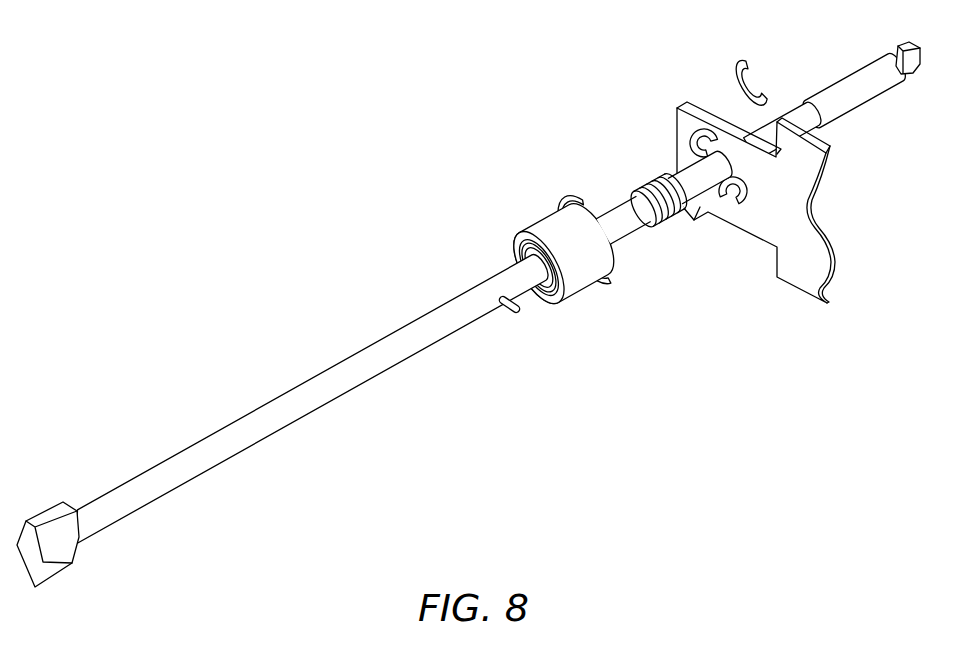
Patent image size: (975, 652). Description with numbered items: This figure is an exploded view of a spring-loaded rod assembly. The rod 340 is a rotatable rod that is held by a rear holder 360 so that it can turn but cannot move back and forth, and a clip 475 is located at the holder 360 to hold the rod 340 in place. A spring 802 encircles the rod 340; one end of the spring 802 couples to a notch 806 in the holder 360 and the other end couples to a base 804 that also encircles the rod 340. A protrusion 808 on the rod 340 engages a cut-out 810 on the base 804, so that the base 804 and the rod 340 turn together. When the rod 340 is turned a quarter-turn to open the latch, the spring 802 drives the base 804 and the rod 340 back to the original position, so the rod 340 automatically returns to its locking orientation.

The rod 340 is at (307, 383).
The rear holder 360 is at (797, 280).
The clip 475 is at (737, 61).
The spring 802 is at (636, 190).
The base 804 is at (517, 243).
The notch 806 is at (727, 213).
The protrusion 808 is at (507, 312).
The cut-out 810 is at (572, 297).